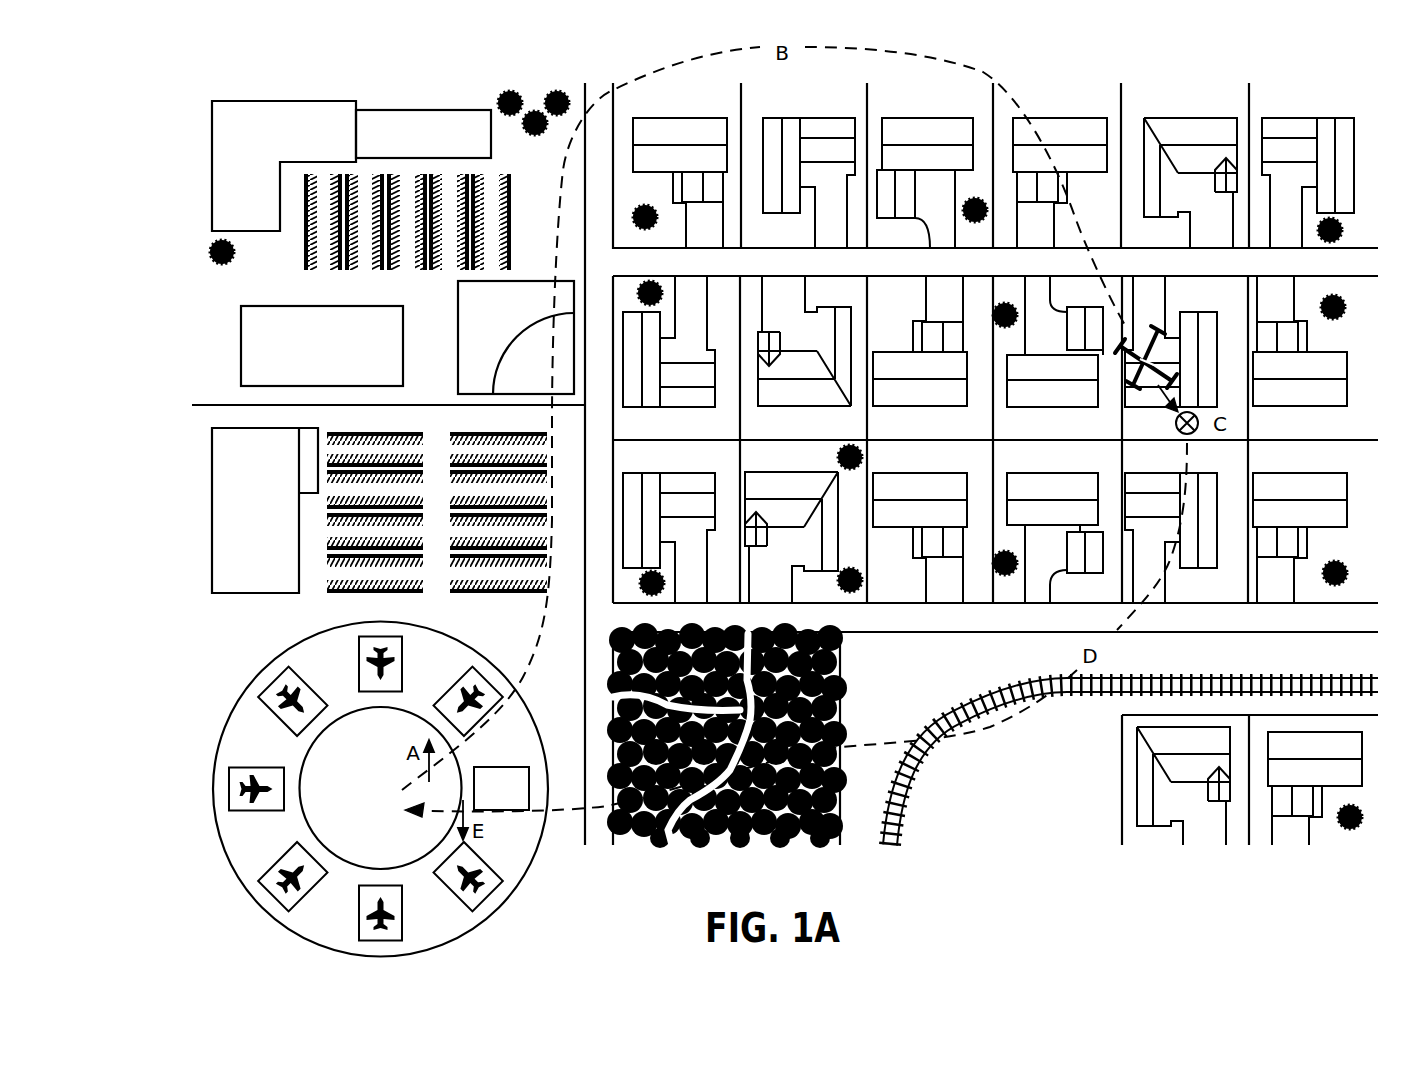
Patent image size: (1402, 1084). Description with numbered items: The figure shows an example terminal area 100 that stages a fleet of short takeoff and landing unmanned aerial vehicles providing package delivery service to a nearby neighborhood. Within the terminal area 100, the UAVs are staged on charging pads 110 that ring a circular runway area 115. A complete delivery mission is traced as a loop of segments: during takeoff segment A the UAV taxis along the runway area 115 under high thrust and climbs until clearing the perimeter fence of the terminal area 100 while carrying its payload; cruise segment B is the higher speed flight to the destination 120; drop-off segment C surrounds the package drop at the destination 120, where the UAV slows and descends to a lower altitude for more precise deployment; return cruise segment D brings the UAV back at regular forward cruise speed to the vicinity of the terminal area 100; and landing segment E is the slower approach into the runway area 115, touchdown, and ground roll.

The terminal area 100 is at (541, 909).
The charging pad 110 is at (263, 697).
The runway area 115 is at (363, 796).
The destination 120 is at (1175, 422).